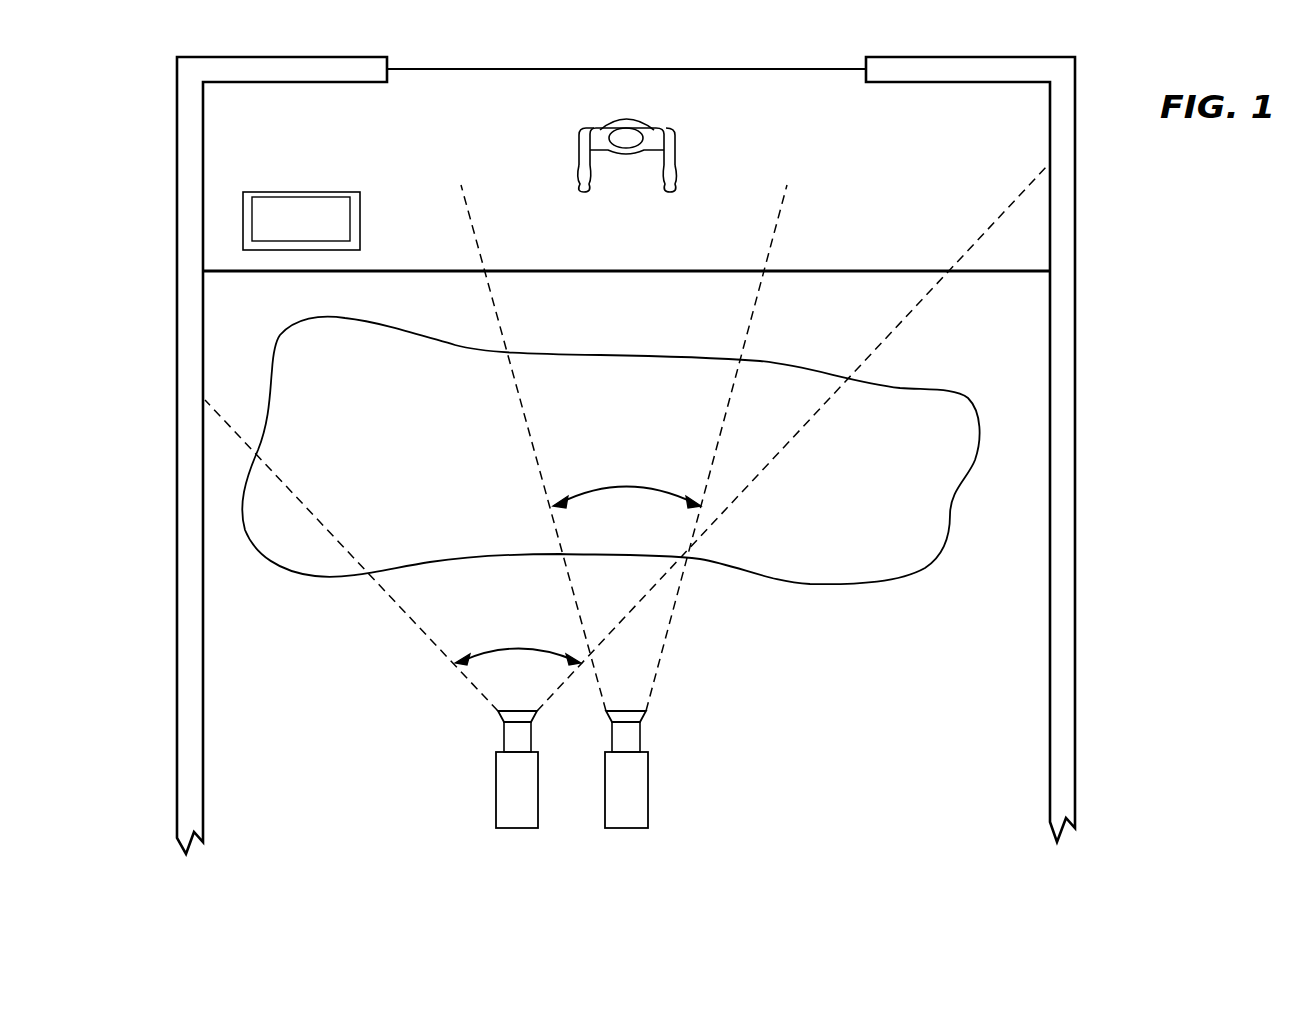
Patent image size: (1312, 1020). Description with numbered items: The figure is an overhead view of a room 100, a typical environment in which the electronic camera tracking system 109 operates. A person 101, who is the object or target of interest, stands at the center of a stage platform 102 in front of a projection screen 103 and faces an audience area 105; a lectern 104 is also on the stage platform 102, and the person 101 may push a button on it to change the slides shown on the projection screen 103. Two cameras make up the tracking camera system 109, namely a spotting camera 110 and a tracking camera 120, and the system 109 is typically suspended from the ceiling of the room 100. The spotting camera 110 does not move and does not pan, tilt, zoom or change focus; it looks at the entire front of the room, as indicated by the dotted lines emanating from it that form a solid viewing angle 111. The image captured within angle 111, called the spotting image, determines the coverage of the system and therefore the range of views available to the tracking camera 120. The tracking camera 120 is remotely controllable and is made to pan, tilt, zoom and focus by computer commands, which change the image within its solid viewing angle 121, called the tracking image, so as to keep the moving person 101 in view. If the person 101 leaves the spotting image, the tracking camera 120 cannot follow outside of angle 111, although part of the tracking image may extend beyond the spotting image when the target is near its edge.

The room 100 is at (124, 108).
The person 101 is at (677, 140).
The stage platform 102 is at (1017, 273).
The projection screen 103 is at (795, 69).
The lectern 104 is at (317, 191).
The audience area 105 is at (928, 388).
The tracking camera system 109 is at (590, 843).
The spotting camera 110 is at (496, 815).
The solid viewing angle 111 is at (500, 650).
The tracking camera 120 is at (649, 813).
The solid viewing angle 121 is at (611, 490).